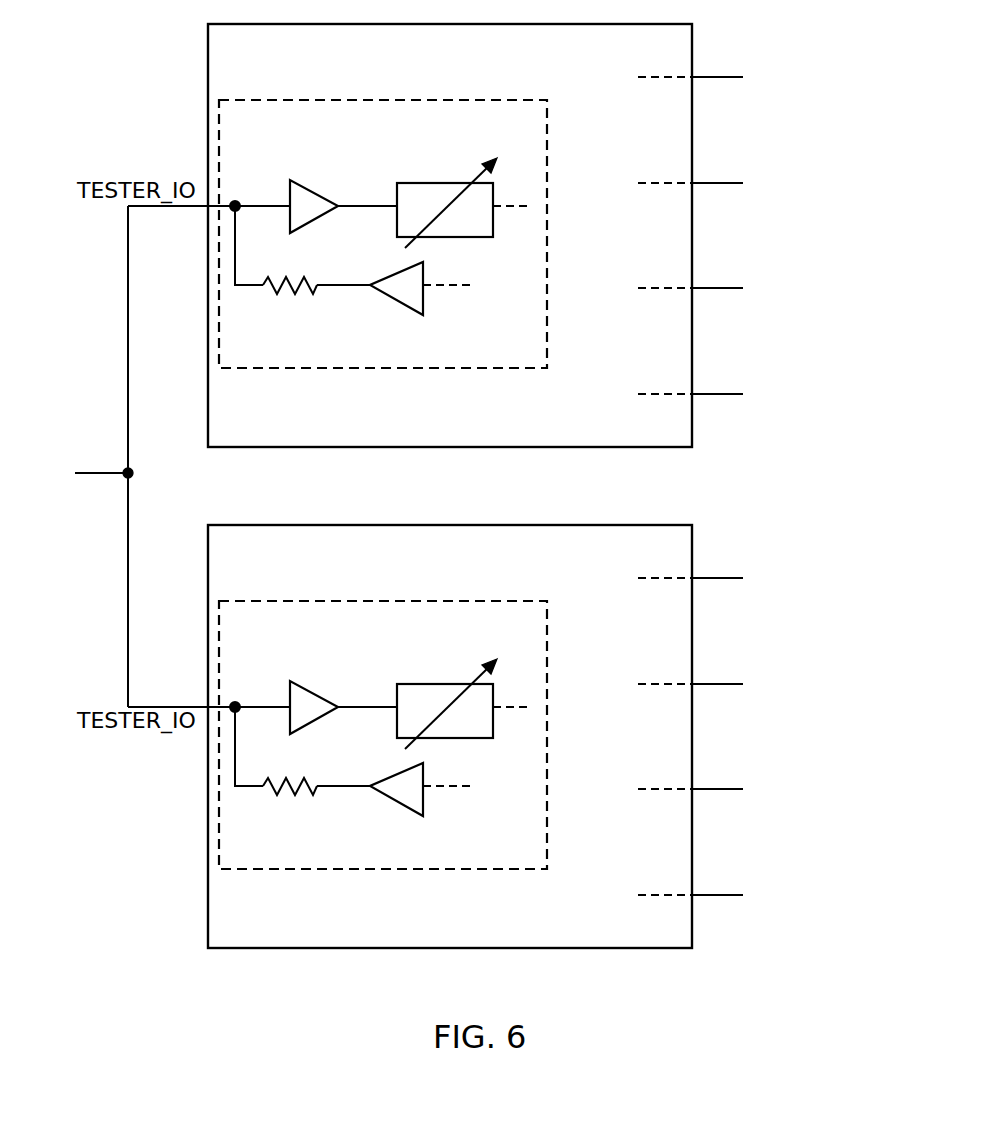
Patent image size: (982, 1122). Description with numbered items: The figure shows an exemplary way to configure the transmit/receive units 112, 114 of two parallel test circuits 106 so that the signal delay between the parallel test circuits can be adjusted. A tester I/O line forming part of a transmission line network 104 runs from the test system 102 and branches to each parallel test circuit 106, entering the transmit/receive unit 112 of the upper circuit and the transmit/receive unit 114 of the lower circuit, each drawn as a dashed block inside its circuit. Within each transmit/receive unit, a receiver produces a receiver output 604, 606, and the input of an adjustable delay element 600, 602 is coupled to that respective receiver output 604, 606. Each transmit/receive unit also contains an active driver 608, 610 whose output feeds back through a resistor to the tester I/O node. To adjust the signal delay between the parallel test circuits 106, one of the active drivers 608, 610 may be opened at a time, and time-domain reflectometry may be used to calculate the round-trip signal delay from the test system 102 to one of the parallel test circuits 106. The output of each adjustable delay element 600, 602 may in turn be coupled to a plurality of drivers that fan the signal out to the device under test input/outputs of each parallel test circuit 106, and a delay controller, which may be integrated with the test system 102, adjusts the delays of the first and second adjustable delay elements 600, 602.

The test system 102 is at (67, 446).
The transmission line network 104 is at (128, 328).
The parallel test circuit 106 is at (583, 447).
The transmit/receive unit 112 is at (413, 100).
The transmit/receive unit 114 is at (413, 602).
The adjustable delay element 600 is at (443, 183).
The adjustable delay element 602 is at (443, 684).
The receiver output 604 is at (367, 204).
The receiver output 606 is at (367, 705).
The active driver 608 is at (395, 278).
The active driver 610 is at (397, 778).